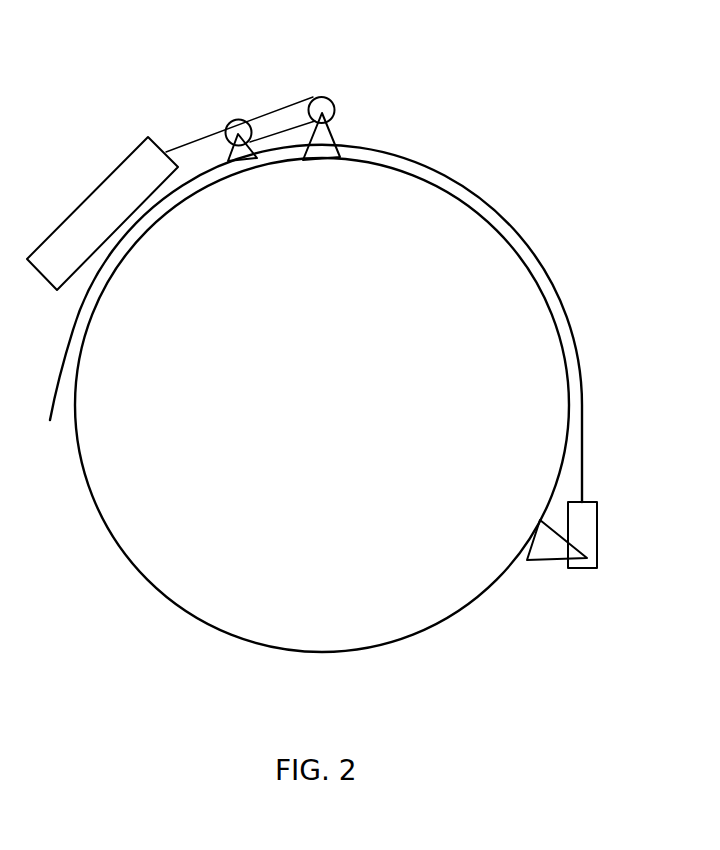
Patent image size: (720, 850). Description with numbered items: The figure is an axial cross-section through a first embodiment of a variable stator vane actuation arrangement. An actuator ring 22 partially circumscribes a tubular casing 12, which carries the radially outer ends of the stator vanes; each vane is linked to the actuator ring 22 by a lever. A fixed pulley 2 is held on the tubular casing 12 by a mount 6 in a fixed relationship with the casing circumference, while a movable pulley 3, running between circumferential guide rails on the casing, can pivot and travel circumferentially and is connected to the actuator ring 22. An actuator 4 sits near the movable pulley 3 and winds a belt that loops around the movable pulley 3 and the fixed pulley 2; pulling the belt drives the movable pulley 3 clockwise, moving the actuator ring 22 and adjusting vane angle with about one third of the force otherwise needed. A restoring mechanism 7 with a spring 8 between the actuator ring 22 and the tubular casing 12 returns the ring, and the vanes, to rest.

The fixed pulley 2 is at (352, 75).
The movable pulley 3 is at (247, 93).
The actuator 4 is at (90, 193).
The mount 6 is at (324, 140).
The restoring mechanism 7 is at (623, 470).
The spring 8 is at (588, 523).
The tubular casing 12 is at (151, 589).
The actuator ring 22 is at (477, 190).